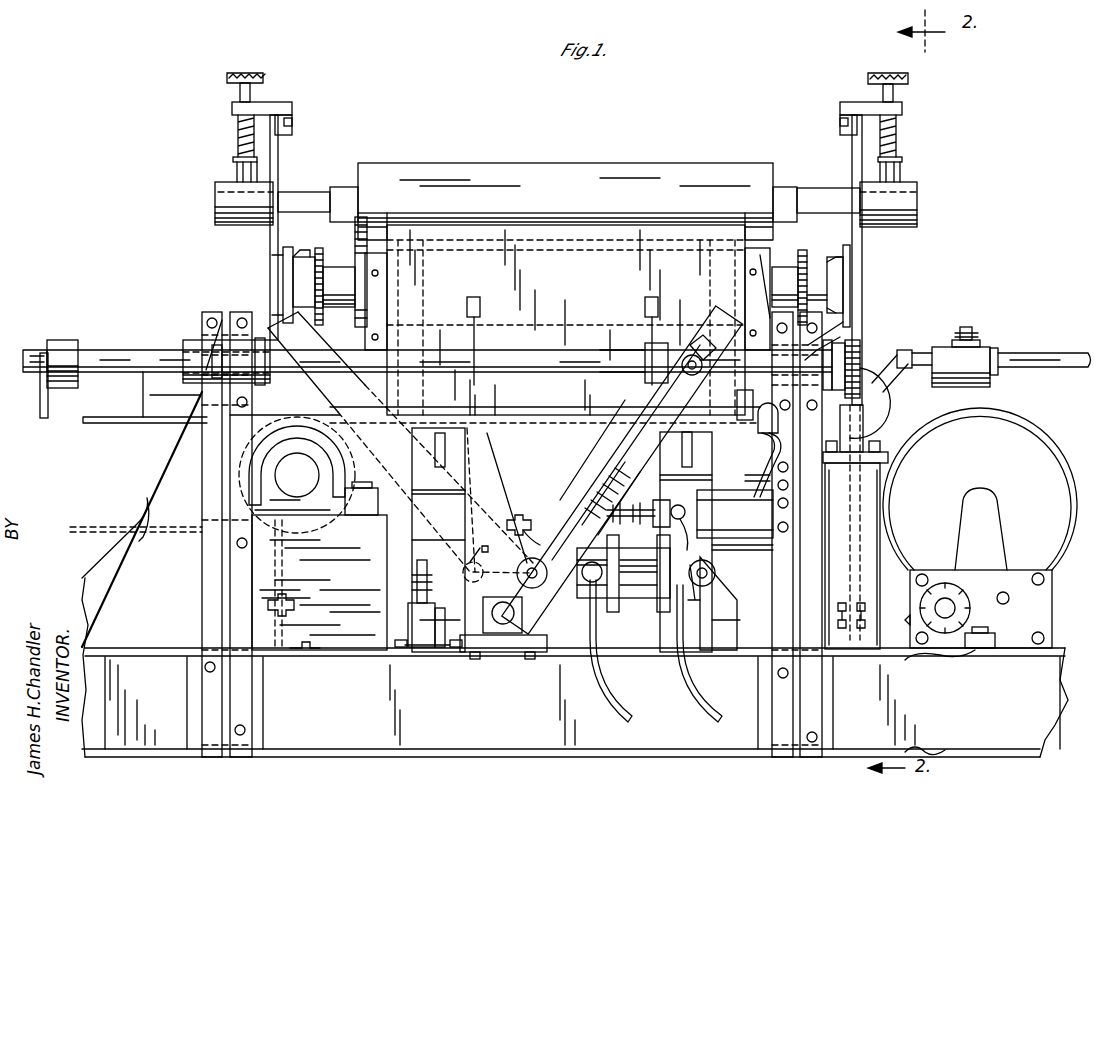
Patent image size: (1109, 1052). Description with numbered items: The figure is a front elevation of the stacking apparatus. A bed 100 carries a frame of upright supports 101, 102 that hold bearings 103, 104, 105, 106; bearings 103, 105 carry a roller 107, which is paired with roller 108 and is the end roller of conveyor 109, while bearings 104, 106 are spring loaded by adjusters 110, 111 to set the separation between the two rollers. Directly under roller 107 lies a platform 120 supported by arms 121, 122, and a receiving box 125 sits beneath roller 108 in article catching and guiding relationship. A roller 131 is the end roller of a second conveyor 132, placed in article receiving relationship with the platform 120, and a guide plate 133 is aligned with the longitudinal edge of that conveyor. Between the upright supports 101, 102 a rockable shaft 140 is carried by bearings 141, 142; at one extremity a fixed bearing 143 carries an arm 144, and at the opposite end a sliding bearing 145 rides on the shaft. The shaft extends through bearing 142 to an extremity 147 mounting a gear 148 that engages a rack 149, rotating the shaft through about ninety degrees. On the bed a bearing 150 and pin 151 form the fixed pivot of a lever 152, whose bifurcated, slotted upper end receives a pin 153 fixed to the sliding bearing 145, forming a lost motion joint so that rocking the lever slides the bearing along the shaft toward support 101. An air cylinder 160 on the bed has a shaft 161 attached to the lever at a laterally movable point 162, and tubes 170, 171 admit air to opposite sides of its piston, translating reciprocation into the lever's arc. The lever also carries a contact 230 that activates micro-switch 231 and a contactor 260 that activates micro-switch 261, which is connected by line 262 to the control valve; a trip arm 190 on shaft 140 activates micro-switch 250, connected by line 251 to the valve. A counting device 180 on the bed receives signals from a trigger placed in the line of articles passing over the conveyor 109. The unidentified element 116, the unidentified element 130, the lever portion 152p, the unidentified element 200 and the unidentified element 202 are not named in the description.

The bed 100 is at (1038, 722).
The upright support 101 is at (210, 570).
The upright support 102 is at (778, 568).
The bearing 103 is at (838, 285).
The bearing 104 is at (905, 203).
The bearing 105 is at (300, 275).
The bearing 106 is at (220, 204).
The roller 107 is at (338, 322).
The roller 108 is at (395, 170).
The conveyor 109 is at (358, 232).
The adjuster 110 is at (237, 120).
The adjuster 111 is at (898, 122).
The pivot pin 116 is at (742, 332).
The platform 120 is at (560, 422).
The arm 121 is at (460, 473).
The arm 122 is at (742, 578).
The receiving box 125 is at (588, 230).
The box frame 130 is at (338, 635).
The roller 131 is at (295, 435).
The conveyor 132 is at (120, 425).
The guide plate 133 is at (152, 402).
The rockable shaft 140 is at (120, 365).
The bearing 141 is at (190, 340).
The bearing 142 is at (817, 352).
The bearing 143 is at (58, 355).
The arm 144 is at (44, 410).
The sliding bearing 145 is at (595, 380).
The extremity 147 is at (860, 365).
The gear 148 is at (856, 342).
The rack 149 is at (902, 371).
The bearing 150 is at (518, 620).
The pin 151 is at (505, 618).
The lever 152 is at (612, 480).
The arm portion 152p is at (316, 560).
The pin 153 is at (680, 390).
The air cylinder 160 is at (633, 603).
The shaft 161 is at (625, 603).
The point 162 is at (490, 535).
The tube 170 is at (602, 676).
The tube 171 is at (698, 684).
The counting device 180 is at (1020, 440).
The trip arm 190 is at (770, 275).
The column 200 is at (890, 422).
The shaft 202 is at (997, 352).
The contact 230 is at (510, 520).
The micro-switch 231 is at (422, 630).
The micro-switch 250 is at (752, 470).
The line 251 is at (735, 513).
The contactor 260 is at (623, 573).
The micro-switch 261 is at (672, 505).
The line 262 is at (700, 540).